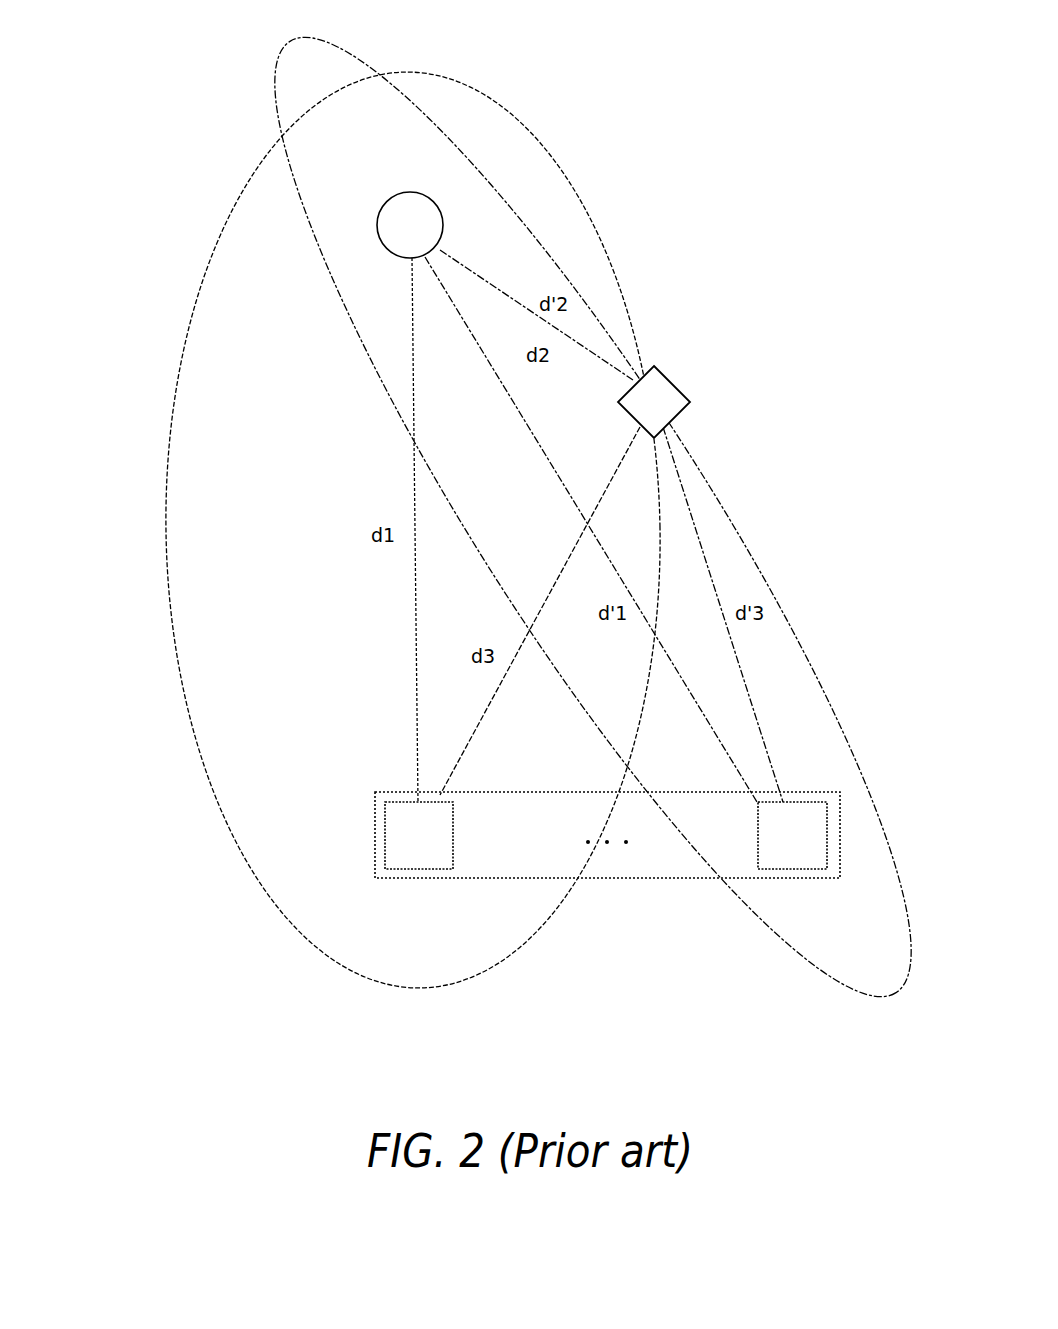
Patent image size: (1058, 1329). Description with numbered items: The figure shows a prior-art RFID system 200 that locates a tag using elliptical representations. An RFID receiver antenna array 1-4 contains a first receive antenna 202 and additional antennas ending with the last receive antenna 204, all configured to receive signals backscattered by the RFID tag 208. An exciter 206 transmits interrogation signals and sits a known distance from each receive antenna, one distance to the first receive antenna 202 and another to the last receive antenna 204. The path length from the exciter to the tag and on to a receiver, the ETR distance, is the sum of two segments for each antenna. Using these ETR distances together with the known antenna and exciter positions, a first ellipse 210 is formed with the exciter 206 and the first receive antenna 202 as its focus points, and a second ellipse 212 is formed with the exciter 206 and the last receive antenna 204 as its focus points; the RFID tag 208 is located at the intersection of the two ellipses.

The RFID system 200 is at (180, 1014).
The first receive antenna RX1 202 is at (407, 872).
The last receive antenna RXN 204 is at (783, 878).
The exciter 206 is at (433, 200).
The RFID tag 208 is at (678, 378).
The first ellipse 210 is at (223, 817).
The second ellipse 212 is at (735, 530).
The RFID receiver antenna array 1-4 is at (613, 880).